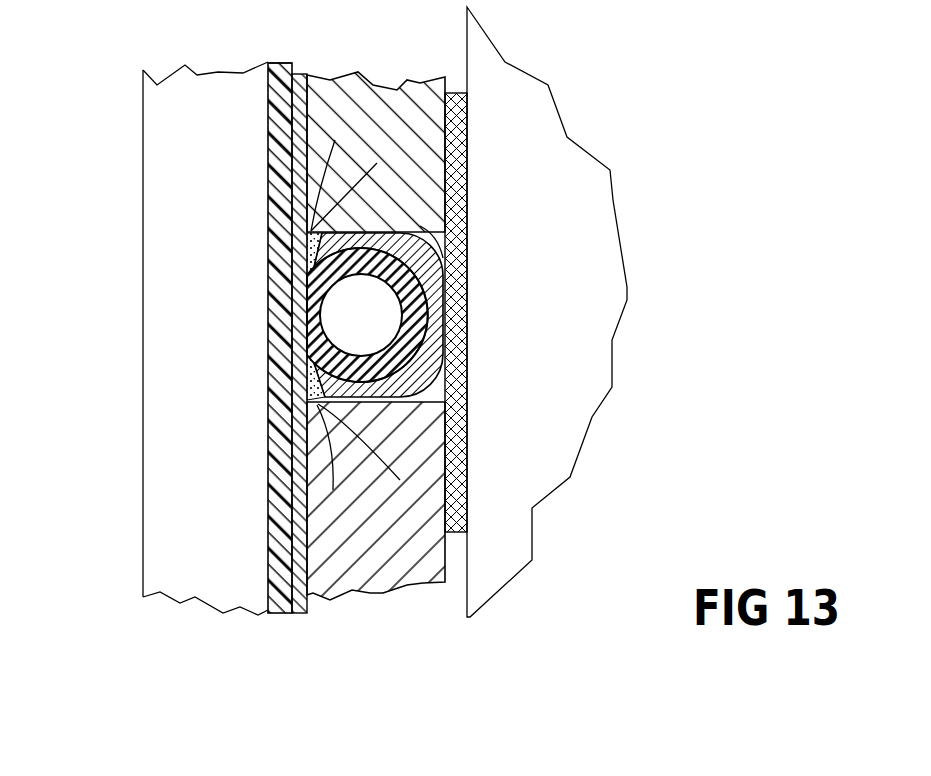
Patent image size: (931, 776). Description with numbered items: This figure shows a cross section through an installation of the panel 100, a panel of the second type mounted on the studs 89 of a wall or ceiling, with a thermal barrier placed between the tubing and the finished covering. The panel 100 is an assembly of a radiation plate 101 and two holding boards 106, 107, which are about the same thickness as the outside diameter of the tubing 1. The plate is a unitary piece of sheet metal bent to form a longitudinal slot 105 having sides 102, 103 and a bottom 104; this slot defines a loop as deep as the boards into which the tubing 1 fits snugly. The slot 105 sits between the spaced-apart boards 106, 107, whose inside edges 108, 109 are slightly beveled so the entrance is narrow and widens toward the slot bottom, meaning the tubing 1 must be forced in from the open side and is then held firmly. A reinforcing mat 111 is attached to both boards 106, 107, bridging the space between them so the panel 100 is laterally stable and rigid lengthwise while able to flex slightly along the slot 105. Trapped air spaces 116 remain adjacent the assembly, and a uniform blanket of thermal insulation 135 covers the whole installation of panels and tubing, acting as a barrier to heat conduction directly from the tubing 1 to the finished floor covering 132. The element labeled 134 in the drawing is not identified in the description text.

The tubing 1 is at (268, 326).
The studs 89 is at (547, 135).
The panel 100 is at (397, 64).
The radiation plate 101 is at (287, 128).
The slot side 102 is at (297, 272).
The slot side 103 is at (272, 343).
The slot bottom 104 is at (430, 358).
The longitudinal slot 105 is at (255, 297).
The holding board 106 is at (322, 77).
The holding board 107 is at (360, 588).
The inside edge 108 is at (467, 260).
The inside edge 109 is at (413, 400).
The reinforcing mat 111 is at (465, 305).
The trapped air spaces 116 is at (273, 450).
The finished floor covering 132 is at (168, 614).
The first wall panel 134 is at (143, 272).
The thermal insulation blanket 135 is at (268, 62).